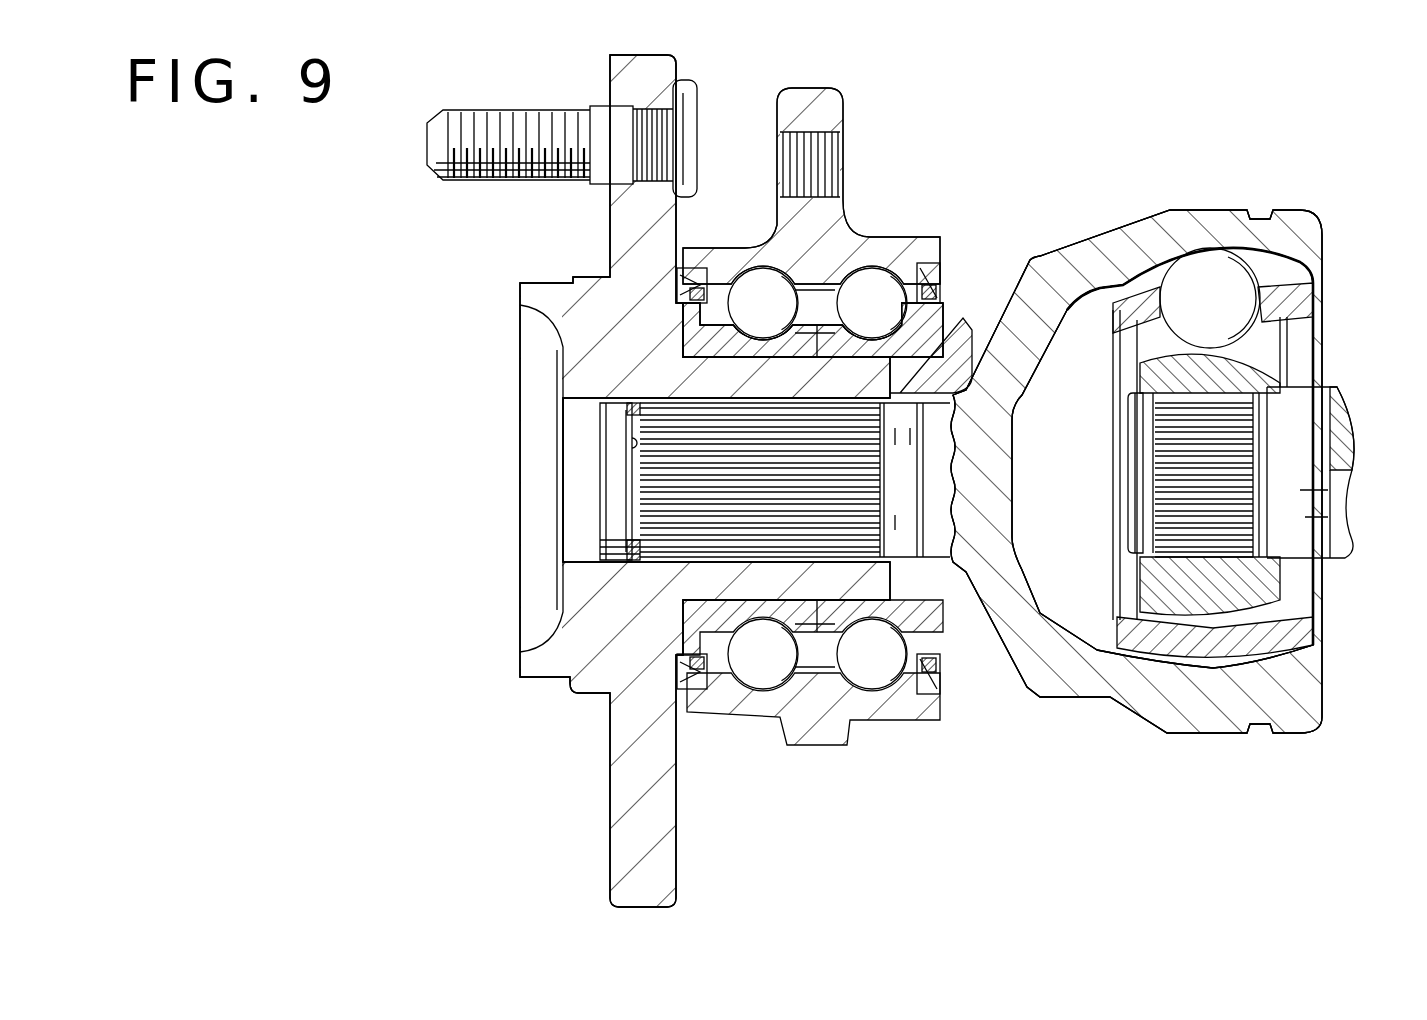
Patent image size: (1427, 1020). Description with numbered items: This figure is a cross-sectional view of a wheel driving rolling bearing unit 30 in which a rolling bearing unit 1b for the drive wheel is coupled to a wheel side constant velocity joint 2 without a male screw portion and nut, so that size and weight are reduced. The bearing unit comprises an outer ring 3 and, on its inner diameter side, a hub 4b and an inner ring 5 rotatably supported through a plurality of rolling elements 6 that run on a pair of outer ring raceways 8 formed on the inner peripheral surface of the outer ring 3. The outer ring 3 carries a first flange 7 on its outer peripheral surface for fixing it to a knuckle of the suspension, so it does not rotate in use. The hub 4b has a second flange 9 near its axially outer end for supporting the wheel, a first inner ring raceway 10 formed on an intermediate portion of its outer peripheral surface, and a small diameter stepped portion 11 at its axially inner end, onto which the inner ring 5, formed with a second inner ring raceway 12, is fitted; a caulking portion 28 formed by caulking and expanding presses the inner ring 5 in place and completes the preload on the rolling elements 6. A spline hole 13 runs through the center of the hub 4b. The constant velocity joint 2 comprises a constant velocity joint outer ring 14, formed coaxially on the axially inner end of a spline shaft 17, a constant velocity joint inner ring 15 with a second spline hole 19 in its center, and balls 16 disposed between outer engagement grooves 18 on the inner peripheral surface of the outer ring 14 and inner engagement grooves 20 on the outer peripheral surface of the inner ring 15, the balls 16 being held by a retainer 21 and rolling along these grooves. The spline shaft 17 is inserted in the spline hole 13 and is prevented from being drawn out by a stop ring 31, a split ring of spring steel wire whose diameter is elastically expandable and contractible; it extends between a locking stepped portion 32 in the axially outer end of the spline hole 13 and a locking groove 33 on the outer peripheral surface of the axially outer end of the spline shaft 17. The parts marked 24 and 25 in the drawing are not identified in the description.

The rolling bearing unit for the drive wheel 1b is at (910, 137).
The wheel side constant velocity joint 2 is at (1187, 163).
The outer ring 3 is at (909, 712).
The hub 4b is at (607, 277).
The inner ring 5 is at (893, 287).
The rolling elements 6 is at (857, 287).
The first flange 7 is at (805, 105).
The outer ring raceways 8 is at (780, 657).
The second flange 9 is at (620, 66).
The first inner ring raceway 10 is at (773, 287).
The small diameter stepped portion 11 is at (914, 480).
The second inner ring raceway 12 is at (880, 337).
The spline hole 13 is at (748, 418).
The constant velocity joint outer ring 14 is at (1077, 272).
The constant velocity joint inner ring 15 is at (1280, 357).
The balls 16 is at (1152, 228).
The spline shaft 17 is at (688, 530).
The outer engagement grooves 18 is at (1180, 277).
The second spline hole 19 is at (1240, 520).
The inner engagement grooves 20 is at (1268, 300).
The retainer 21 is at (1282, 285).
The drive shaft 24 is at (1318, 403).
The spline 25 is at (1247, 487).
The caulking portion 28 is at (943, 310).
The wheel driving rolling bearing unit 30 is at (1014, 112).
The stop ring 31 is at (630, 400).
The locking stepped portion 32 is at (627, 528).
The locking groove 33 is at (632, 445).